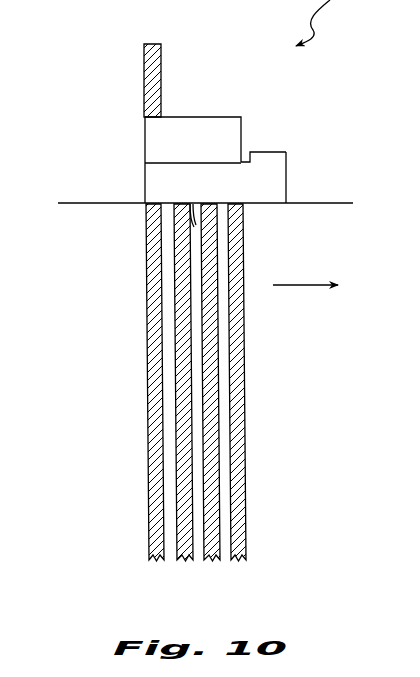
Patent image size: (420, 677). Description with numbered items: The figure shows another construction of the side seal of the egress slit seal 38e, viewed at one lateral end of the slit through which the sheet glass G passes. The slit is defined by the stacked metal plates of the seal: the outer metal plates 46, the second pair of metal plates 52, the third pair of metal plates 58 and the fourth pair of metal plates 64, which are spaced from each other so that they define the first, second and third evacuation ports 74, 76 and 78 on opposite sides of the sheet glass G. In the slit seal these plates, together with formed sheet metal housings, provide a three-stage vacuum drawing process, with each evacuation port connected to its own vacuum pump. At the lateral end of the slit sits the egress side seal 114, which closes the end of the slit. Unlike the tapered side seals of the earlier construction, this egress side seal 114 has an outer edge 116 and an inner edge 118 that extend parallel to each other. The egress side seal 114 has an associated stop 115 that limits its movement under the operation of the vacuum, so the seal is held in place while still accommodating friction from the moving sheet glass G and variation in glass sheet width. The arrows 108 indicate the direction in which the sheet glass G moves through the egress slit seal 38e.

The sheet glass G is at (83, 203).
The egress slit seal 38e is at (186, 302).
The upper and lower outer metal plates 46 is at (286, 382).
The second pair of upper and lower metal plates 52 is at (273, 382).
The third pair of upper and lower metal plates 58 is at (175, 382).
The fourth pair of upper and lower metal plates 64 is at (100, 382).
The first evacuation port 74 is at (225, 435).
The second evacuation port 76 is at (198, 468).
The third evacuation port 78 is at (163, 523).
The arrows 108 is at (288, 283).
The egress side seal 114 is at (300, 183).
The stop 115 is at (243, 148).
The outer edge 116 is at (210, 163).
The inner edge 118 is at (190, 226).